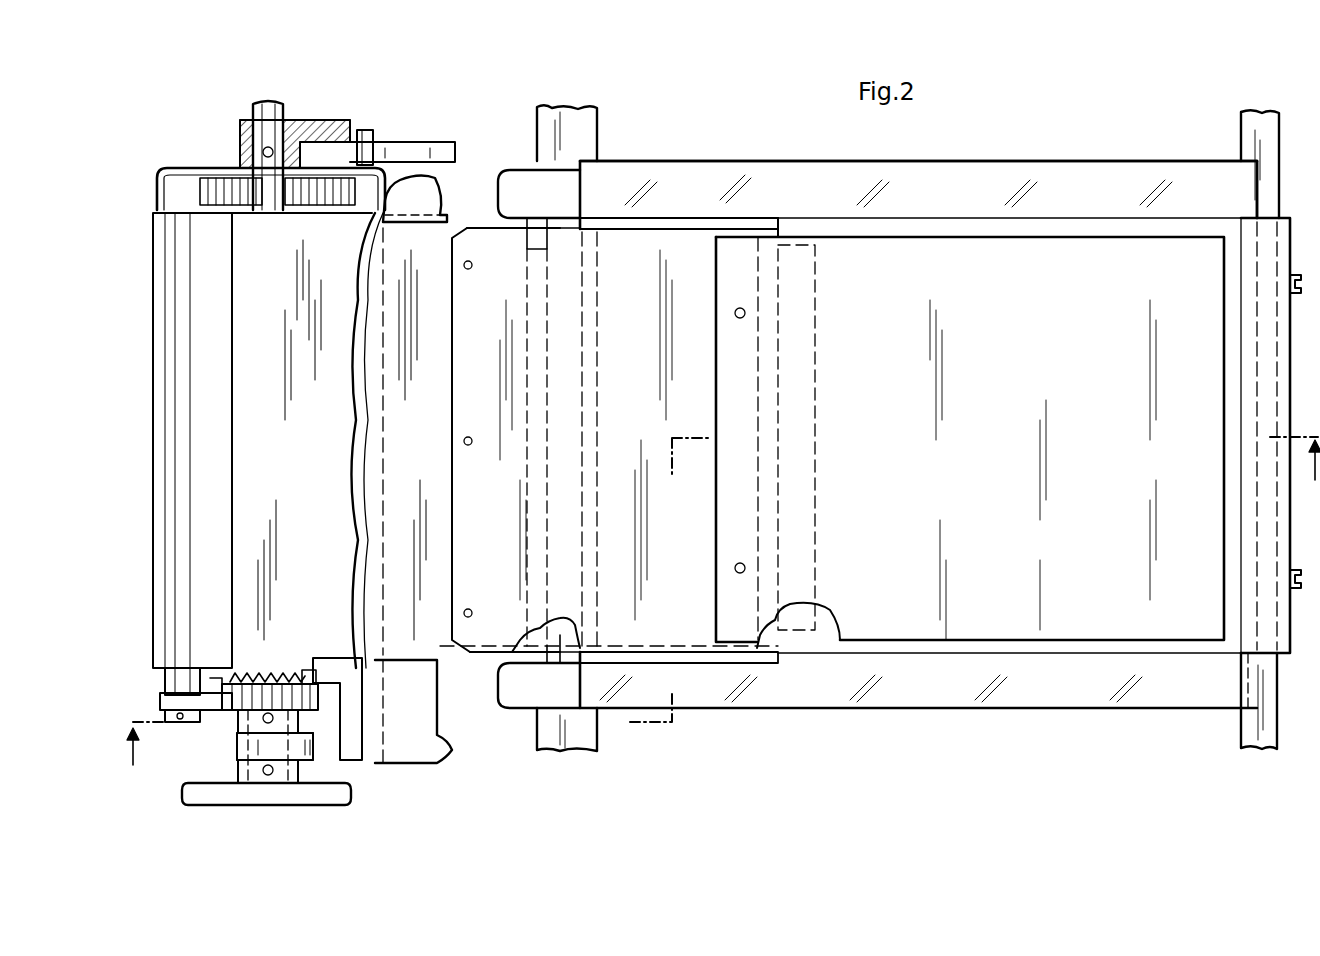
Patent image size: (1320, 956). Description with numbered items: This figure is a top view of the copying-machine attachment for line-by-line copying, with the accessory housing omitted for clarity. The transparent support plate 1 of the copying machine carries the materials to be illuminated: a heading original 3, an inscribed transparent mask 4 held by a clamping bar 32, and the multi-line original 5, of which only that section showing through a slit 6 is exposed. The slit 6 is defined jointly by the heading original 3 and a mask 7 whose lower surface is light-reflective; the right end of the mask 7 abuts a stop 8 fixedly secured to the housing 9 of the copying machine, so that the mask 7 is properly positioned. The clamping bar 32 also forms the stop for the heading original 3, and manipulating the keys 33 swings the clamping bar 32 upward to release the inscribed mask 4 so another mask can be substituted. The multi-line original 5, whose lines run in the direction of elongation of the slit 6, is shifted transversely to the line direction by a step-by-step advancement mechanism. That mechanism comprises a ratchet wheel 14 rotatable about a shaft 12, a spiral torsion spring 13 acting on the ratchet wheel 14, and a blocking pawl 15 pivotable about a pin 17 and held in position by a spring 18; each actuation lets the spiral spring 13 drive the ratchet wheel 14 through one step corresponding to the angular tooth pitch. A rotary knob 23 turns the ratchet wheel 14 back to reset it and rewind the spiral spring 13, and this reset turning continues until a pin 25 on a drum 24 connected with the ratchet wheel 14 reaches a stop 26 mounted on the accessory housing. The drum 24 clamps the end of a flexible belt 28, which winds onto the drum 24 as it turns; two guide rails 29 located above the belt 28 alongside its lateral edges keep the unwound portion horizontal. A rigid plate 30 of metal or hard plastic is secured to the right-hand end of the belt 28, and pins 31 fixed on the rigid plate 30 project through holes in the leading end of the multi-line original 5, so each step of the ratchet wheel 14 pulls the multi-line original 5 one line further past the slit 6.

The transparent support plate 1 is at (902, 692).
The heading original 3 is at (697, 226).
The inscribed transparent mask 4 is at (467, 232).
The multi-line original 5 is at (980, 234).
The slit 6 is at (795, 622).
The mask 7 is at (1068, 218).
The stop 8 is at (1282, 648).
The housing 9 is at (543, 126).
The shaft 12 is at (280, 105).
The spiral torsion spring 13 is at (230, 178).
The ratchet wheel 14 is at (310, 694).
The blocking pawl 15 is at (212, 702).
The pin 17 is at (175, 683).
The spring 18 is at (280, 672).
The rotary knob 23 is at (224, 797).
The drum 24 is at (190, 207).
The pin 25 is at (366, 140).
The stop 26 is at (404, 152).
The flexible belt 28 is at (245, 405).
The guide rails 29 is at (428, 196).
The rigid plate 30 is at (495, 650).
The pins 31 is at (746, 314).
The clamping bar 32 is at (560, 635).
The keys 33 is at (527, 695).